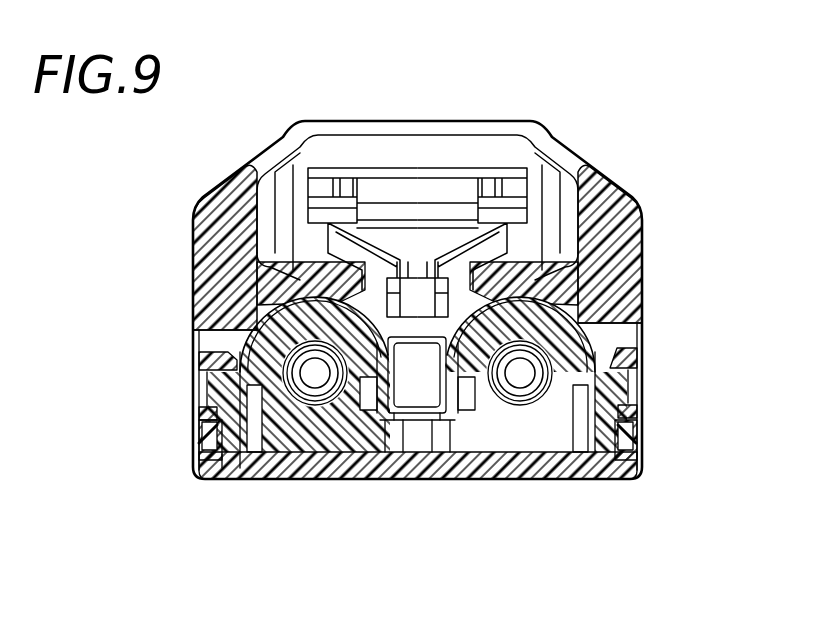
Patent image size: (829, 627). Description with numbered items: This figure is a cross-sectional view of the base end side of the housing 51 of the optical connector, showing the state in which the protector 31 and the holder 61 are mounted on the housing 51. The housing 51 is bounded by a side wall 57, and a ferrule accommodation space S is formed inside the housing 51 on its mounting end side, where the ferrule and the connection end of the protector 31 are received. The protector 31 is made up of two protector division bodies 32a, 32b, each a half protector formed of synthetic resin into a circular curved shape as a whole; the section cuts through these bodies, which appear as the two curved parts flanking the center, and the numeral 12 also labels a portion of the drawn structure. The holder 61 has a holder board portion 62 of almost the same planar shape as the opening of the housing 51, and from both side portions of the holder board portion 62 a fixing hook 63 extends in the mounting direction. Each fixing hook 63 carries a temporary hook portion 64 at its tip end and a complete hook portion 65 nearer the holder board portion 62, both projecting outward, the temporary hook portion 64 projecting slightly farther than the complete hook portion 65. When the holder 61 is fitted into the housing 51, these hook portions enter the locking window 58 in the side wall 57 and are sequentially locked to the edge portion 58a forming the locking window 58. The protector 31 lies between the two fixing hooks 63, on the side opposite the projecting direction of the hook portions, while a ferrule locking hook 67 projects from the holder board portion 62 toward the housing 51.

The housing 51 is at (207, 193).
The side wall 57 is at (193, 262).
The locking window 58 is at (200, 343).
The temporary hook portion 64 is at (203, 355).
The complete hook portion 65 is at (203, 409).
The edge portion 58a is at (200, 437).
The fixing hook 63 is at (222, 468).
The ferrule accommodation space S is at (240, 468).
The protector division body 32a is at (290, 468).
The protector division body 32b is at (555, 478).
The terminal 12 is at (315, 380).
The holder 61 is at (331, 480).
The holder board portion 62 is at (390, 458).
The ferrule locking hook 67 is at (417, 450).
The protector 31 is at (527, 454).